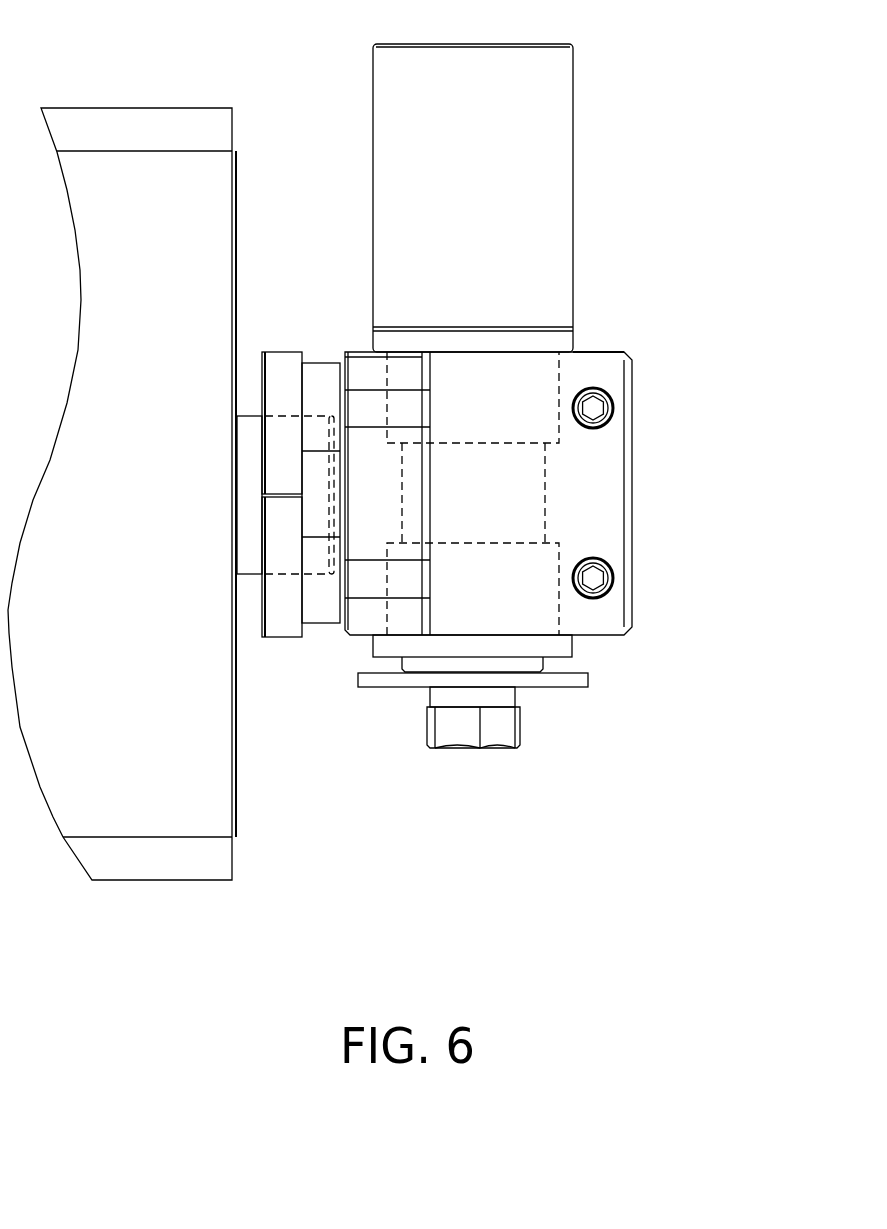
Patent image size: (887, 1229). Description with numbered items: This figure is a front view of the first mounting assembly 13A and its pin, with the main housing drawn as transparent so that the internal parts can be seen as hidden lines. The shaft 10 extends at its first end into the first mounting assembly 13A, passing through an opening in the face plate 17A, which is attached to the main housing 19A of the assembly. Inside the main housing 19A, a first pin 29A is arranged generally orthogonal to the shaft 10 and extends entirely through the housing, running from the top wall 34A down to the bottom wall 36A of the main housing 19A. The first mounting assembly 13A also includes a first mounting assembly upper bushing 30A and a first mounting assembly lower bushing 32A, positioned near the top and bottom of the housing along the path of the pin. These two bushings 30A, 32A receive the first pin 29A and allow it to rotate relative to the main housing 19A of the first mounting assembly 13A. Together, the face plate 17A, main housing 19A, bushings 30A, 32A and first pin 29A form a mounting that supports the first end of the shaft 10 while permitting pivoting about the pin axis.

The shaft 10 is at (245, 412).
The first mounting assembly 13A is at (306, 467).
The face plate 17A is at (282, 638).
The main housing 19A is at (553, 471).
The first pin 29A is at (513, 482).
The first mounting assembly upper bushing 30A is at (522, 374).
The first mounting assembly lower bushing 32A is at (527, 603).
The top wall 34A is at (593, 350).
The bottom wall 36A is at (597, 637).